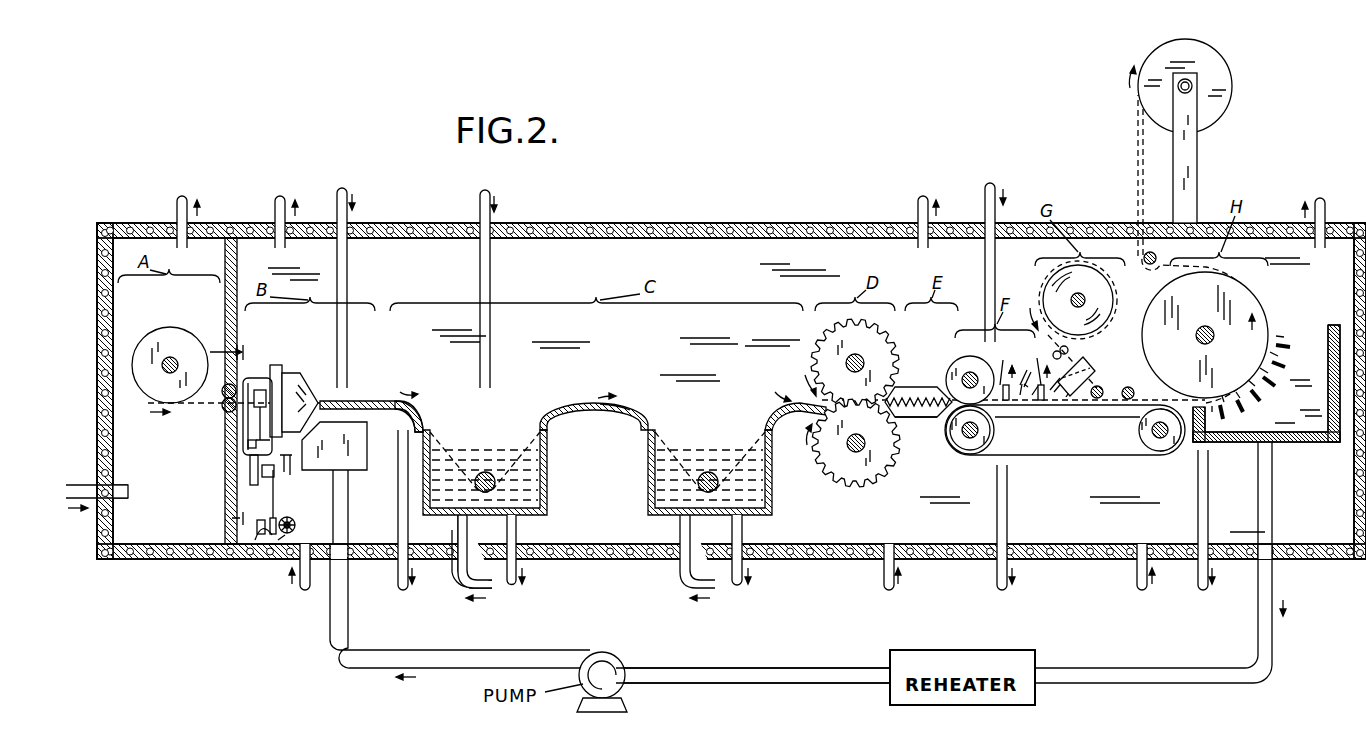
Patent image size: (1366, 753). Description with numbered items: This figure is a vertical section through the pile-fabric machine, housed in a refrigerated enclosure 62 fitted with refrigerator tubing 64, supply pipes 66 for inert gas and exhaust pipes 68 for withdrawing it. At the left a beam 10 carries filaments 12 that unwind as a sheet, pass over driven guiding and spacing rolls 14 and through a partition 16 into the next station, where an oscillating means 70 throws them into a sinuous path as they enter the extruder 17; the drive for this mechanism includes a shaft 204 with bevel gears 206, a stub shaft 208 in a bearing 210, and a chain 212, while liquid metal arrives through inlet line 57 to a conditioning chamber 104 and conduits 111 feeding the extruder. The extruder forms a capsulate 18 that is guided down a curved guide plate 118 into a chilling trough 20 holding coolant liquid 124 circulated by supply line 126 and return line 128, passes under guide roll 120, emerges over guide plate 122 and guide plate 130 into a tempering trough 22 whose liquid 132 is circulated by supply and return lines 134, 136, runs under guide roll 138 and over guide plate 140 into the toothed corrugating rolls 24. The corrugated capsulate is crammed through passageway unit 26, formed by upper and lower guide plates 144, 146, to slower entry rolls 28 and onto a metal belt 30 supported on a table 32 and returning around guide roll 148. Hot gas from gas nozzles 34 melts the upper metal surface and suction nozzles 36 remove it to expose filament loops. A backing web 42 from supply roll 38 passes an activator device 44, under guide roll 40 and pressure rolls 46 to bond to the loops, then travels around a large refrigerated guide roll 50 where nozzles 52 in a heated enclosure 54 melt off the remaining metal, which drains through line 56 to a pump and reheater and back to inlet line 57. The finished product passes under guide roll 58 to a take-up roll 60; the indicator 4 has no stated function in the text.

The section indicator arrows 4 is at (236, 435).
The beam 10 is at (170, 357).
The filaments 12 is at (214, 406).
The guiding and transverse spacing means 14 is at (222, 390).
The partition 16 is at (226, 297).
The extruder 17 is at (300, 381).
The capsulate 18 is at (418, 410).
The chilling trough 20 is at (548, 485).
The tempering trough 22 is at (648, 503).
The corrugating rolls 24 is at (814, 348).
The passageway unit 26 is at (906, 386).
The entry rolls 28 is at (960, 364).
The metal belt 30 is at (1072, 455).
The table 32 is at (1092, 417).
The gas nozzles 34 is at (1044, 372).
The suction nozzles 36 is at (1058, 398).
The supply roll 38 is at (1046, 287).
The guide roll 40 is at (1100, 387).
The web 42 is at (1096, 375).
The activator device 44 is at (1068, 358).
The pressure rolls 46 is at (1138, 386).
The guide roll 50 is at (1248, 298).
The nozzles 52 is at (1292, 346).
The heated enclosure 54 is at (1316, 324).
The line 56 is at (1272, 488).
The inlet line 57 is at (345, 606).
The guide roll 58 is at (1150, 250).
The take-up roll 60 is at (1185, 40).
The refrigerated enclosure 62 is at (717, 225).
The refrigerator tubing 64 is at (640, 225).
The supply pipes 66 is at (340, 192).
The exhaust pipes 68 is at (177, 204).
The oscillating means 70 is at (256, 425).
The conditioning chamber 104 is at (356, 470).
The conduits 111 is at (298, 460).
The guide plate 118 is at (366, 399).
The guide roll 120 is at (486, 471).
The guide plate 122 is at (570, 407).
The coolant liquid 124 is at (538, 466).
The supply line 126 is at (458, 523).
The return line 128 is at (516, 523).
The guide plate 130 is at (616, 405).
The liquid 132 is at (688, 450).
The supply line 134 is at (680, 580).
The return line 136 is at (742, 523).
The guide roll 138 is at (709, 471).
The guide plate 140 is at (776, 420).
The upper guide plate 144 is at (905, 398).
The lower guide plate 146 is at (925, 417).
The guide roll 148 is at (1160, 452).
The shaft 204 is at (294, 520).
The bevel gear 206 is at (286, 544).
The stub shaft 208 is at (275, 544).
The bearing 210 is at (258, 544).
The chain 212 is at (285, 502).